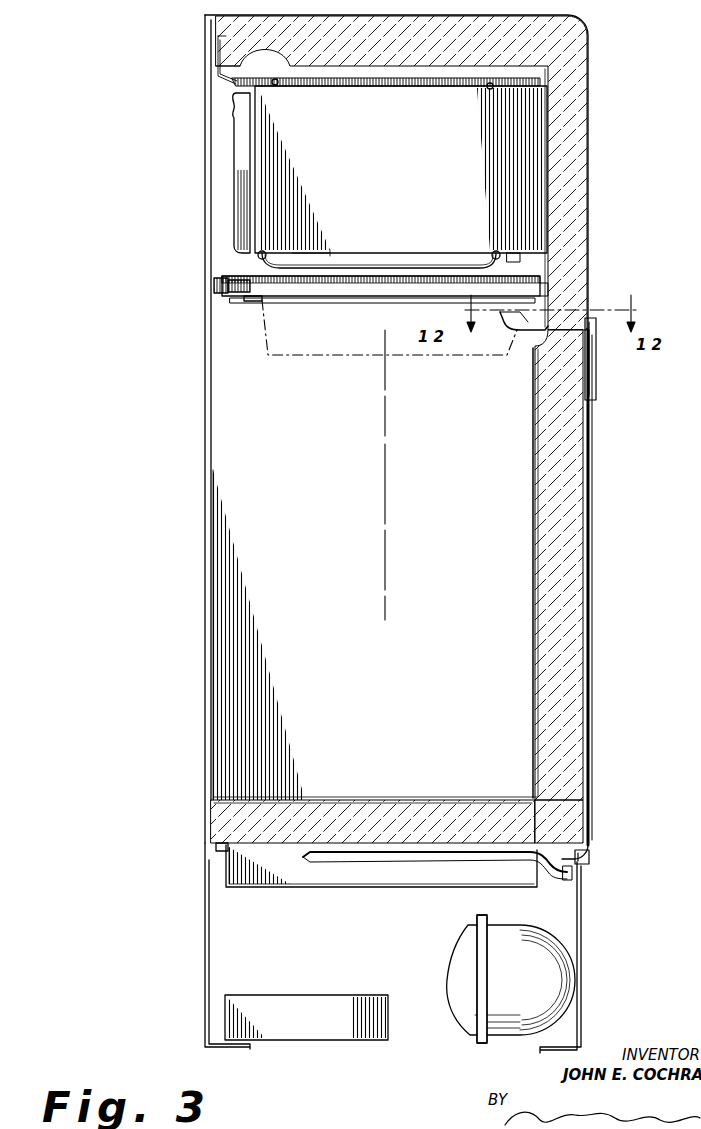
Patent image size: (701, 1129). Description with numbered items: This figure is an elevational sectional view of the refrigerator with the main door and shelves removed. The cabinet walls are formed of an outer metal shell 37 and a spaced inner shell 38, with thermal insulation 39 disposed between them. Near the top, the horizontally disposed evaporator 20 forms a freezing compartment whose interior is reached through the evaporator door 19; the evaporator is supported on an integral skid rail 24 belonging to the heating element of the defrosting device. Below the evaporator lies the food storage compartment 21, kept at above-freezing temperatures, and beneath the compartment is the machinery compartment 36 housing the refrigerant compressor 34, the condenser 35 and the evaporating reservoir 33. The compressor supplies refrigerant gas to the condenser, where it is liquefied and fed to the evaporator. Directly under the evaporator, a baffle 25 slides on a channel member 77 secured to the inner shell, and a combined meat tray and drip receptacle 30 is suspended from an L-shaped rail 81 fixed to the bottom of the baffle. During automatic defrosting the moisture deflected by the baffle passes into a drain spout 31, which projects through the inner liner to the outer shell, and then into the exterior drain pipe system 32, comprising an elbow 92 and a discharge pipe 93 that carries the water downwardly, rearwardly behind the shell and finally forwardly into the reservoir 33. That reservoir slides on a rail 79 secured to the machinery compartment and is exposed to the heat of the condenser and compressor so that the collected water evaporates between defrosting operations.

The evaporator door 19 is at (238, 222).
The evaporator 20 is at (412, 161).
The food storage compartment 21 is at (233, 507).
The skid rail 24 is at (400, 268).
The baffle 25 is at (352, 288).
The meat storage or drip tray 30 is at (325, 360).
The drain spout 31 is at (522, 332).
The drain pipe system 32 is at (592, 662).
The evaporating reservoir 33 is at (372, 892).
The refrigerant compressor 34 is at (530, 977).
The condenser 35 is at (310, 1024).
The machinery compartment 36 is at (234, 931).
The outer metal shell 37 is at (589, 471).
The inner shell 38 is at (532, 492).
The thermal insulation 39 is at (567, 539).
The channel member 77 is at (215, 290).
The rail 79 is at (222, 848).
The L-shaped rail 81 is at (258, 298).
The elbow 92 is at (585, 862).
The discharge pipe 93 is at (500, 857).